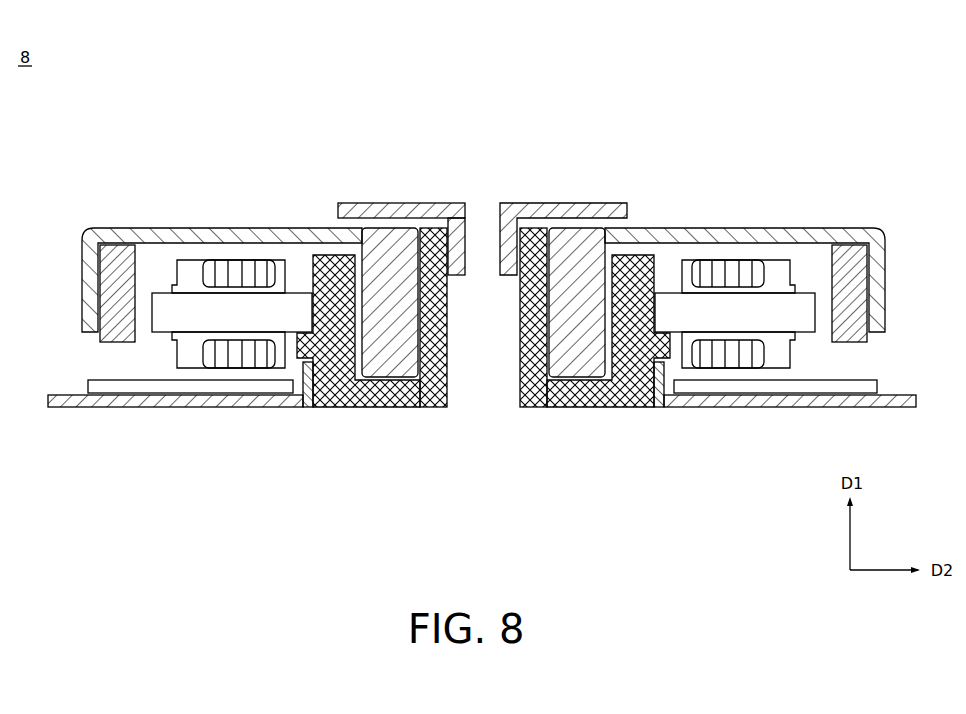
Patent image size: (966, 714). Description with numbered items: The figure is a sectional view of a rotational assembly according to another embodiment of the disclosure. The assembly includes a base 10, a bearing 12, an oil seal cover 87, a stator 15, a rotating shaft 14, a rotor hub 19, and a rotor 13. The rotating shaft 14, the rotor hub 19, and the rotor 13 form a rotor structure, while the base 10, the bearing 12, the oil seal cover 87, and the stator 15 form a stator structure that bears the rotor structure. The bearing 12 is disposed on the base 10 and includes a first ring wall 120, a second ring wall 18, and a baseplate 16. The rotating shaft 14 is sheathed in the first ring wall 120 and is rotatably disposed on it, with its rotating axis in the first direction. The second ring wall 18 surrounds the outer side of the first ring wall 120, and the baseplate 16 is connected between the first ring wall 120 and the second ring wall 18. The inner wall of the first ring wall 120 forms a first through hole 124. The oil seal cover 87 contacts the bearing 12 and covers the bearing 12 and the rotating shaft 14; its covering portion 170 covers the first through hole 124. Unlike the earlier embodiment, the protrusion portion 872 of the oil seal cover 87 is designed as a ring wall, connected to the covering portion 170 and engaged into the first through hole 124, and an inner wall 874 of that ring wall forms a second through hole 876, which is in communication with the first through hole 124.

The base 10 is at (233, 405).
The bearing 12 is at (376, 371).
The rotor 13 is at (117, 268).
The rotating shaft 14 is at (380, 252).
The stator 15 is at (220, 272).
The baseplate 16 is at (388, 392).
The second ring wall 18 is at (332, 352).
The rotor hub 19 is at (258, 236).
The oil seal cover 87 is at (407, 177).
The first ring wall 120 is at (437, 362).
The first through hole 124 is at (487, 390).
The covering portion 170 is at (395, 210).
The protrusion portion 872 is at (458, 235).
The inner wall 874 is at (483, 237).
The second through hole 876 is at (502, 200).